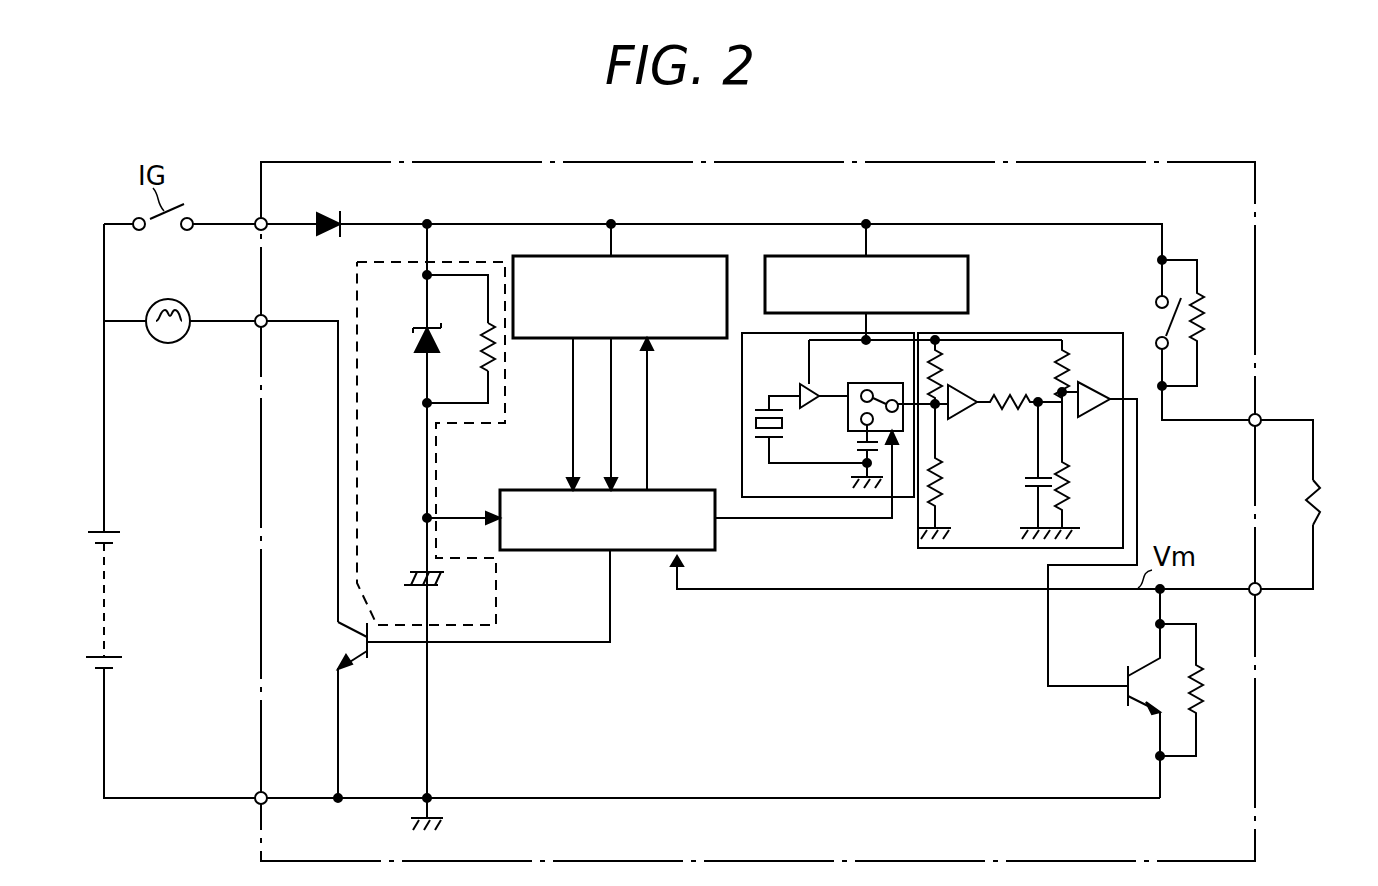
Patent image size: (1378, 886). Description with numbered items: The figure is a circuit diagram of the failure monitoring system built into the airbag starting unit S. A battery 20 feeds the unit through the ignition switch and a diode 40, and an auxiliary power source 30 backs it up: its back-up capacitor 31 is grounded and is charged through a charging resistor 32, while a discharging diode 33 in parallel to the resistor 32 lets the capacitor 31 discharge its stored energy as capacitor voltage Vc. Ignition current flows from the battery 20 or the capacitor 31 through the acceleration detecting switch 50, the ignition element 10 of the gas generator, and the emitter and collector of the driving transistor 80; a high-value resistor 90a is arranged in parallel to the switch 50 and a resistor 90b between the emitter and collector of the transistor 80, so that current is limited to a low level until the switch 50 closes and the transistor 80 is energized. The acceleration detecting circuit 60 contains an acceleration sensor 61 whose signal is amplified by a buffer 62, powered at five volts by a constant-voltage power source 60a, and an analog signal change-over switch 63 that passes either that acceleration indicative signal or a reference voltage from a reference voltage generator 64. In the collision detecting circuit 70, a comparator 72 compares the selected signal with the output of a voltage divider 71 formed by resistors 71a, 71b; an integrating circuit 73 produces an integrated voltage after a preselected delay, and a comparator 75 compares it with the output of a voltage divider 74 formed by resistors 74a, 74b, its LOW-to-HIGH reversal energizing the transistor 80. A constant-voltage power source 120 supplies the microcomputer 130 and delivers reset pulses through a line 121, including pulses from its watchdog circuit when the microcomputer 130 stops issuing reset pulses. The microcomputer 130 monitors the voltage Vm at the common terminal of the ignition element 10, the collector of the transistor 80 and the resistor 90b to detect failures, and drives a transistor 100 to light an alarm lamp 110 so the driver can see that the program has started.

The airbag starting unit S is at (1022, 152).
The ignition element 10 is at (1318, 486).
The battery 20 is at (106, 590).
The auxiliary power source 30 is at (436, 266).
The back-up capacitor 31 is at (444, 578).
The charging resistor 32 is at (483, 345).
The discharging diode 33 is at (414, 338).
The diode 40 is at (326, 238).
The acceleration detecting switch 50 is at (1164, 328).
The acceleration detecting circuit 60 is at (820, 498).
The constant-voltage power source 60a is at (962, 258).
The acceleration sensor 61 is at (752, 422).
The buffer 62 is at (800, 388).
The analog signal change-over switch 63 is at (862, 384).
The reference voltage generator 64 is at (855, 446).
The collision detecting circuit 70 is at (1004, 334).
The voltage divider 71 is at (966, 462).
The resistor 71a is at (944, 366).
The resistor 71b is at (944, 486).
The comparator 72 is at (972, 412).
The integrating circuit 73 is at (1010, 396).
The voltage divider 74 is at (1065, 464).
The resistor 74a is at (1068, 374).
The resistor 74b is at (1090, 460).
The comparator 75 is at (1102, 410).
The driving transistor 80 is at (1120, 700).
The resistor 90a is at (1202, 330).
The resistor 90b is at (1200, 698).
The transistor 100 is at (372, 655).
The alarm lamp 110 is at (186, 343).
The constant-voltage power source 120 is at (513, 258).
The line 121 is at (610, 418).
The microcomputer 130 is at (502, 488).